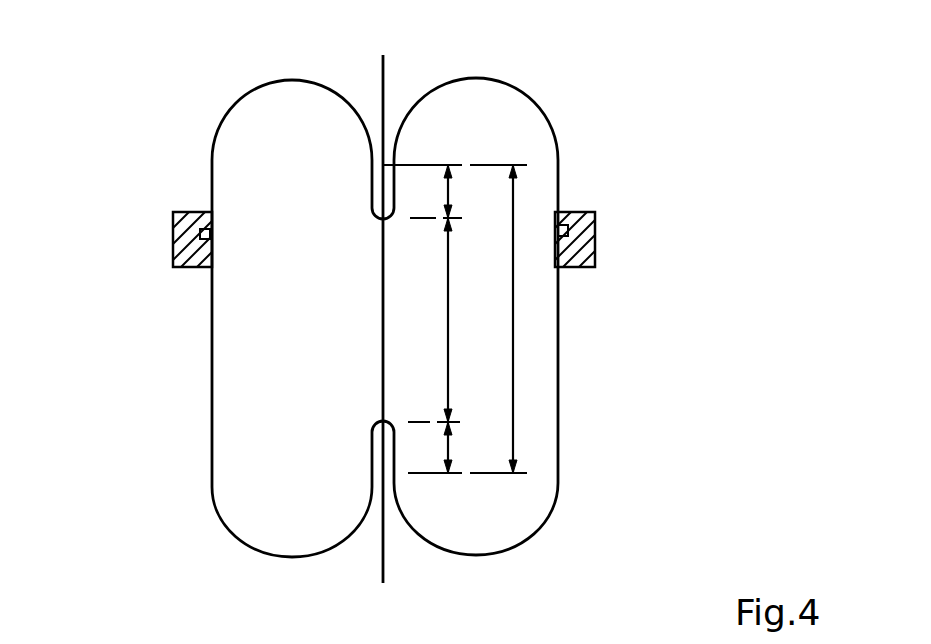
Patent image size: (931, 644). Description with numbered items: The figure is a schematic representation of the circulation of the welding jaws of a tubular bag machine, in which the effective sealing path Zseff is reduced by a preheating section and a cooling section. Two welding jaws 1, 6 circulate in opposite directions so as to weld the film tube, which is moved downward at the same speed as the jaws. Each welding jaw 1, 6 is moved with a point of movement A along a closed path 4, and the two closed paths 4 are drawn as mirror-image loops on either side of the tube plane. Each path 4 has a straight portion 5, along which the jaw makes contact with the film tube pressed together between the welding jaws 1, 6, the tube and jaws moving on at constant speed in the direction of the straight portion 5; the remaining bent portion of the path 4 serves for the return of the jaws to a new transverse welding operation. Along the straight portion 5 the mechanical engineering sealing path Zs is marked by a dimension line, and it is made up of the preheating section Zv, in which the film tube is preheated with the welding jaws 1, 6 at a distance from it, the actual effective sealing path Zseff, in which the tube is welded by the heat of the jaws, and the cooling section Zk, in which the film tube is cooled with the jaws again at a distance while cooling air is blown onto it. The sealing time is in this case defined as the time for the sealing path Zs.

The welding jaw 1 is at (595, 225).
The closed path 4 is at (212, 430).
The straight portion 5 is at (383, 325).
The welding jaw 6 is at (173, 237).
The point of movement A is at (205, 233).
The preheating section Zv is at (455, 191).
The effective sealing path Zseff is at (429, 320).
The cooling section Zk is at (462, 447).
The sealing path Zs is at (496, 319).